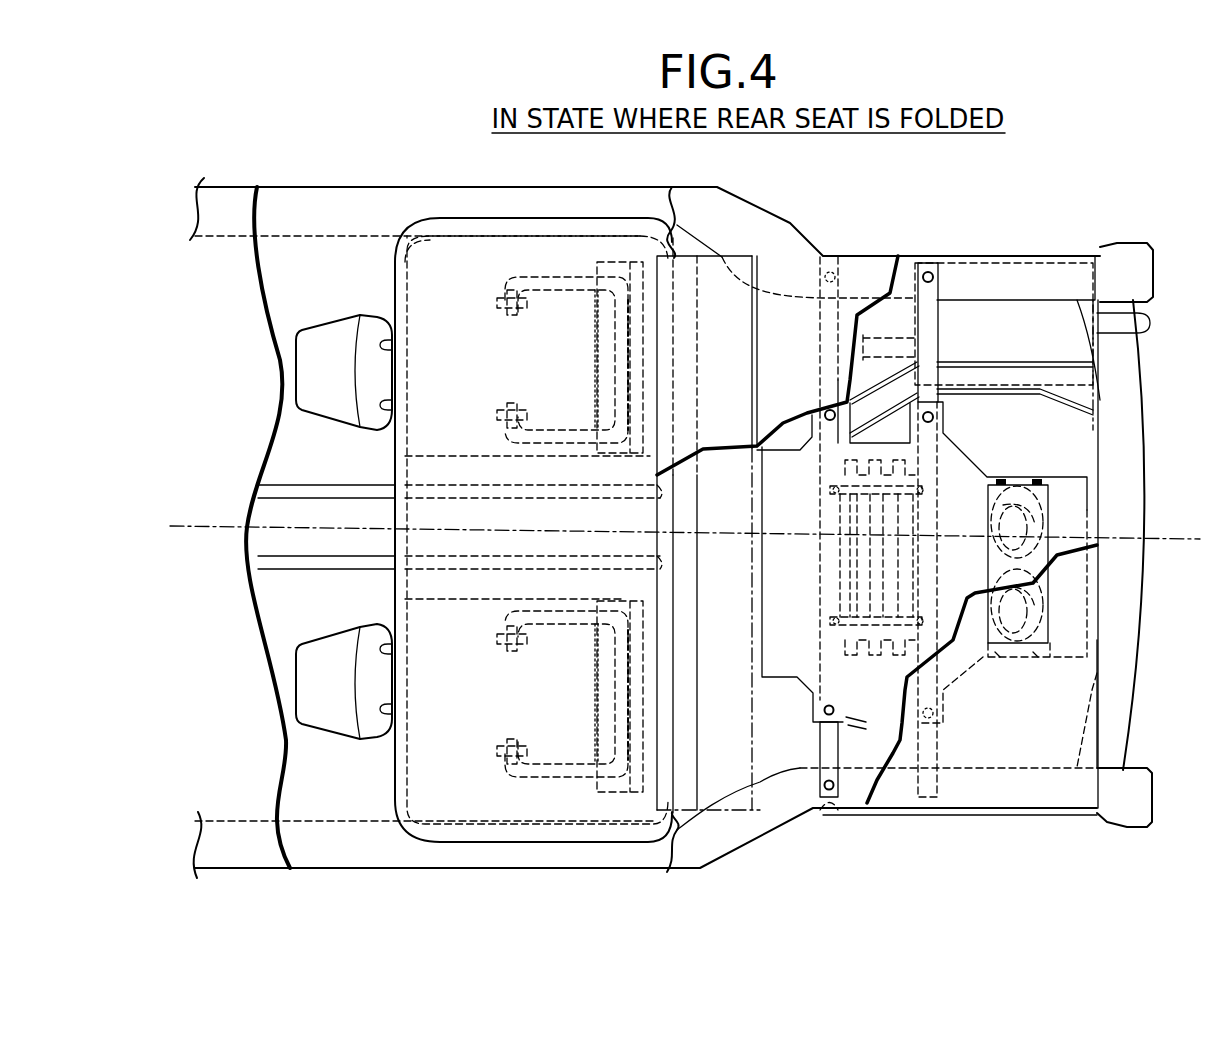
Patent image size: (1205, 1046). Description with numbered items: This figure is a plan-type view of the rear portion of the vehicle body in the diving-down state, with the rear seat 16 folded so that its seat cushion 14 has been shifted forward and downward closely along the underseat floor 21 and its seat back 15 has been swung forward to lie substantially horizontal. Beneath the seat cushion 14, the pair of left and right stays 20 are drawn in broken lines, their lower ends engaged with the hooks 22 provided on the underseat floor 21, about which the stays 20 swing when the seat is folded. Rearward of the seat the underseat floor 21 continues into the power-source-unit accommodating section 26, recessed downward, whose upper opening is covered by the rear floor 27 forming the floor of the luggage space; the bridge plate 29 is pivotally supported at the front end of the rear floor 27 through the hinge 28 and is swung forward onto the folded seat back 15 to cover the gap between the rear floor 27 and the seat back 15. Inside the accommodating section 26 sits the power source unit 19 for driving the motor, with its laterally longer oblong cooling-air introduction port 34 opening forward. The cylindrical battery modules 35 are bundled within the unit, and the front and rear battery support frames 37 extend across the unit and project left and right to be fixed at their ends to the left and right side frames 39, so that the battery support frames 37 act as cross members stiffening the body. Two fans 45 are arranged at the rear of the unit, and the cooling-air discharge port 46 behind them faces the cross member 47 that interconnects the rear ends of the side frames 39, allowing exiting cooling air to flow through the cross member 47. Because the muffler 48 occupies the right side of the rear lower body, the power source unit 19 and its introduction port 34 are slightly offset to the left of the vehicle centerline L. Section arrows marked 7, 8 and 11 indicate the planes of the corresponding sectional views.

The seat cushion 14 is at (392, 764).
The seat back 15 is at (425, 475).
The rear seat 16 is at (382, 306).
The power source unit 19 is at (964, 455).
The stays 20 is at (567, 287).
The underseat floor 21 is at (348, 611).
The hooks 22 is at (603, 372).
The power-source-unit accommodating section 26 is at (1017, 452).
The rear floor 27 is at (1000, 728).
The hinge 28 is at (752, 343).
The bridge plate 29 is at (720, 277).
The cooling-air introduction port 34 is at (762, 552).
The battery modules 35 is at (905, 604).
The battery support frames 37 is at (923, 320).
The side frames 39 is at (218, 193).
The fans 45 is at (982, 507).
The cooling-air discharge port 46 is at (1088, 510).
The cross member 47 is at (1133, 445).
The muffler 48 is at (990, 265).
The centerline L is at (207, 527).
The section line 7 is at (248, 624).
The section line 8 is at (320, 471).
The section line 11 is at (608, 198).